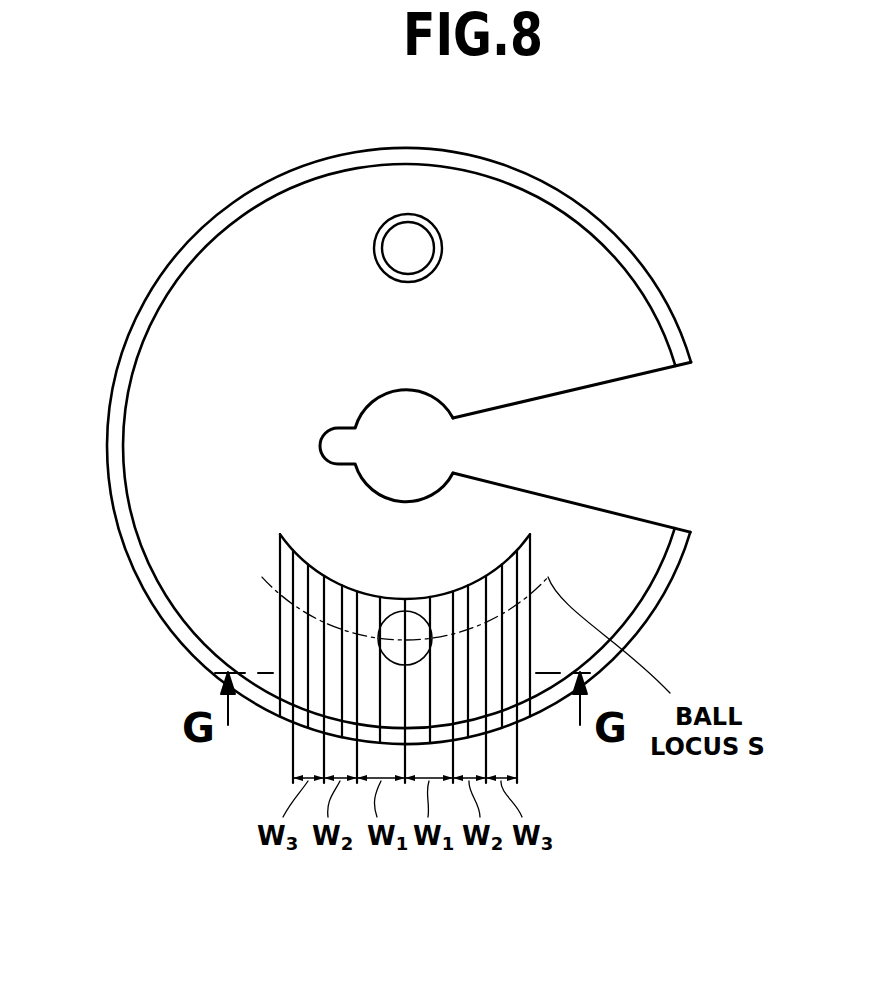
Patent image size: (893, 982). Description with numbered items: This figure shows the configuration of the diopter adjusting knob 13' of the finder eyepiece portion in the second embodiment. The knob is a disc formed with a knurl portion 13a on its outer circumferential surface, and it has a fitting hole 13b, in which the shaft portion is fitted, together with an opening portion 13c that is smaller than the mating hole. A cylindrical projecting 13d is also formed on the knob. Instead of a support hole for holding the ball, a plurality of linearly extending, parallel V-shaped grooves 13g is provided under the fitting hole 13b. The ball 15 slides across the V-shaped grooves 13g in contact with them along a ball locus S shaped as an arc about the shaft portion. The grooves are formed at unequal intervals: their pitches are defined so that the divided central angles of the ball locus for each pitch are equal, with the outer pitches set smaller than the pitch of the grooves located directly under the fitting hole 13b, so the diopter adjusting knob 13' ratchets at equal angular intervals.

The diopter adjusting knob 13' is at (457, 446).
The knurl portion 13a is at (681, 323).
The fitting hole 13b is at (440, 492).
The opening portion 13c is at (645, 520).
The cylindrical projecting 13d is at (436, 229).
The V-shaped grooves 13g is at (478, 693).
The ball 15 is at (418, 610).